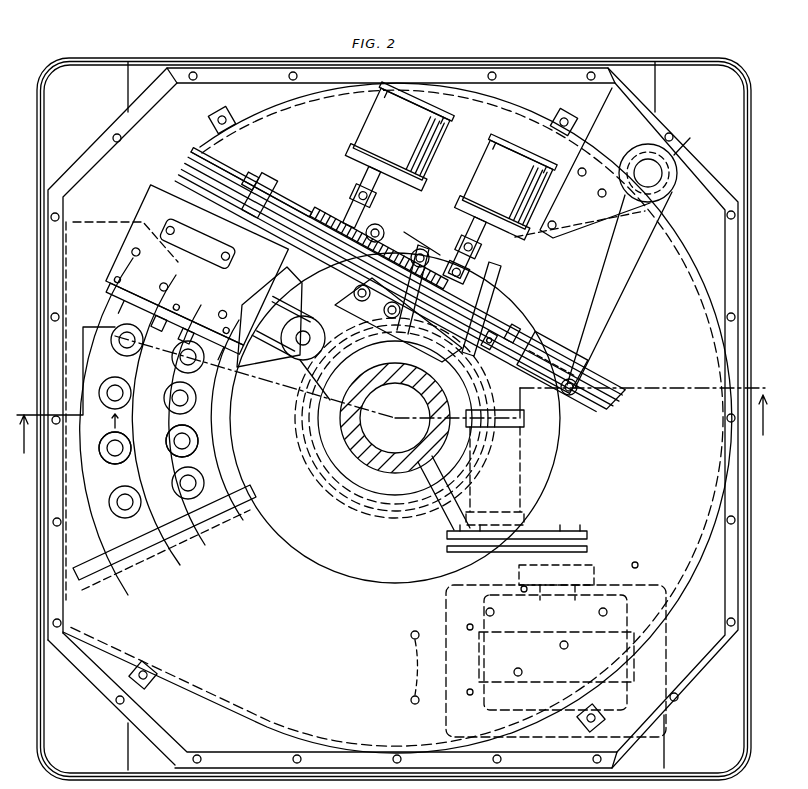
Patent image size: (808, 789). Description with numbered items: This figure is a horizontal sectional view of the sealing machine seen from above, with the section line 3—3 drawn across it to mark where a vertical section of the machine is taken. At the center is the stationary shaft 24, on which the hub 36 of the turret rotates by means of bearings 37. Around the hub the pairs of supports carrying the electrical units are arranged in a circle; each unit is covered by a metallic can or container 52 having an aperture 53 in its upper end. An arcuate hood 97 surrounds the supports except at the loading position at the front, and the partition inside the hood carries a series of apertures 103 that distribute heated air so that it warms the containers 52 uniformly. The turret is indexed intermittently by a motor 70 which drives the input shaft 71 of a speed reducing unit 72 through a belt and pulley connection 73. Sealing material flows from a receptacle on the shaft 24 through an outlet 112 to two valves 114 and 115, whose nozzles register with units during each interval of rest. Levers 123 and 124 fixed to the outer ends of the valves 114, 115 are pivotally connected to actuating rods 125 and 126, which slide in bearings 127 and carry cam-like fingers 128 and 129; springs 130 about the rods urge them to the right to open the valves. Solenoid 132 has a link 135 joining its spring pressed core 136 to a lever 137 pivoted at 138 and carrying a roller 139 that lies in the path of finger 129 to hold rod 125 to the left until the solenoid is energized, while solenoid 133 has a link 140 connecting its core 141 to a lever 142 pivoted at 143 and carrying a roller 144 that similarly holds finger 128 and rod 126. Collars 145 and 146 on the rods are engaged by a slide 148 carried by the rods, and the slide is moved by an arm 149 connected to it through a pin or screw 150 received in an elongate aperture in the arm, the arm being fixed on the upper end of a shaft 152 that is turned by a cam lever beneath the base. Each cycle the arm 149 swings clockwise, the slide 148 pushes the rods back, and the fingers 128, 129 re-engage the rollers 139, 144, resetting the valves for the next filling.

The section line 3 is at (391, 427).
The stationary shaft 24 is at (402, 419).
The hub 36 is at (357, 487).
The bearings 37 is at (405, 462).
The metallic can or container 52 is at (134, 446).
The aperture 53 is at (141, 503).
The motor 70 is at (648, 665).
The input shaft 71 is at (480, 588).
The speed reducing unit 72 is at (522, 455).
The belt and pulley connection 73 is at (542, 530).
The hood 97 is at (288, 552).
The apertures 103 is at (406, 667).
The outlet 112 is at (282, 358).
The valve 114 is at (205, 372).
The valve 115 is at (116, 296).
The lever 123 is at (265, 188).
The lever 124 is at (228, 178).
The actuating rod 125 is at (420, 340).
The actuating rod 126 is at (462, 302).
The bearings 127 is at (296, 200).
The cam-like finger 128 is at (440, 262).
The cam-like finger 129 is at (355, 298).
The springs 130 is at (330, 225).
The solenoid 132 is at (432, 150).
The solenoid 133 is at (512, 165).
The link 135 is at (374, 215).
The spring pressed core 136 is at (370, 182).
The lever 137 is at (302, 316).
The pivot 138 is at (303, 337).
The roller 139 is at (390, 318).
The link 140 is at (470, 274).
The spring pressed core 141 is at (478, 258).
The lever 142 is at (404, 232).
The pivot 143 is at (380, 228).
The roller 144 is at (422, 250).
The collar 145 is at (492, 355).
The collar 146 is at (536, 336).
The slide 148 is at (562, 342).
The arm 149 is at (615, 300).
The pin or screw 150 is at (575, 392).
The shaft 152 is at (655, 172).